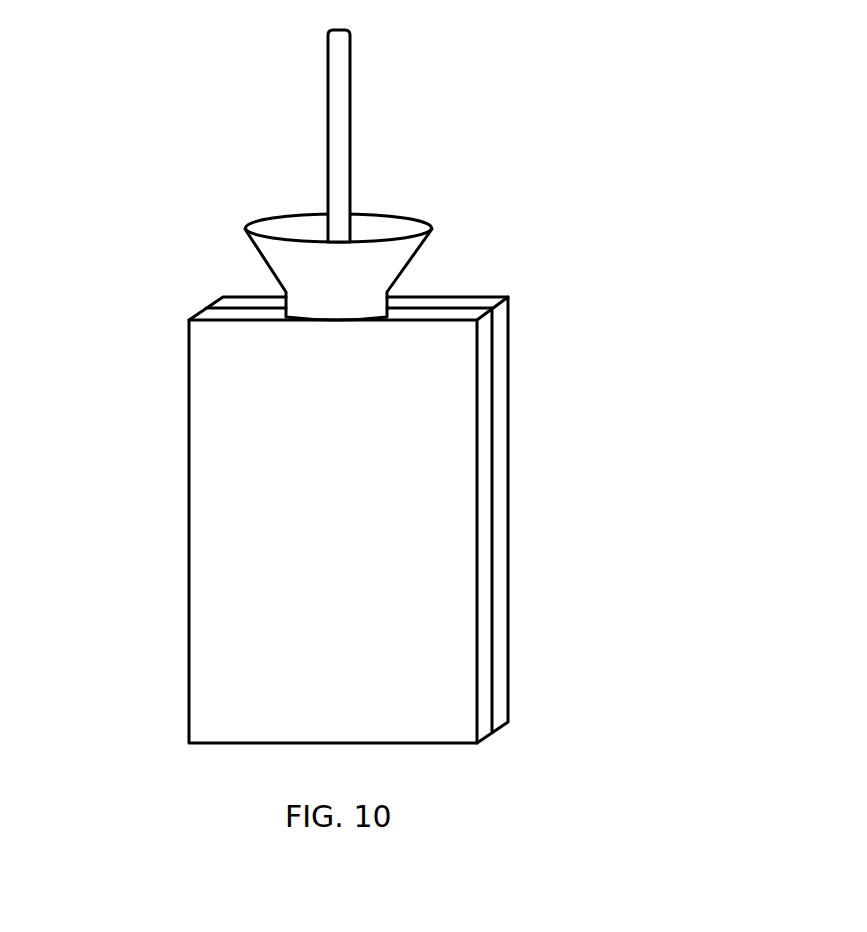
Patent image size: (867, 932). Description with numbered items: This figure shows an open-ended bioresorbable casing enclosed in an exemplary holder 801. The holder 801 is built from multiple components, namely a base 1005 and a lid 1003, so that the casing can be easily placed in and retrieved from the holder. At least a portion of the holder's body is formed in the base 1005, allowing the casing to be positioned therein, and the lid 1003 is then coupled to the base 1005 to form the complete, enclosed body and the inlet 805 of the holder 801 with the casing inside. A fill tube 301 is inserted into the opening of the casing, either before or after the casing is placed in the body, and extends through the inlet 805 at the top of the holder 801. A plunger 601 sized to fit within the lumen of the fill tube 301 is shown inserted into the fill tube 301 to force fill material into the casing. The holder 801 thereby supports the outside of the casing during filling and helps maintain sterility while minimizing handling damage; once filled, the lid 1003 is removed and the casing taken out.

The holder 801 is at (162, 462).
The plunger 601 is at (340, 118).
The fill tube 301 is at (420, 258).
The inlet 805 is at (277, 317).
The base 1005 is at (510, 345).
The lid 1003 is at (430, 510).